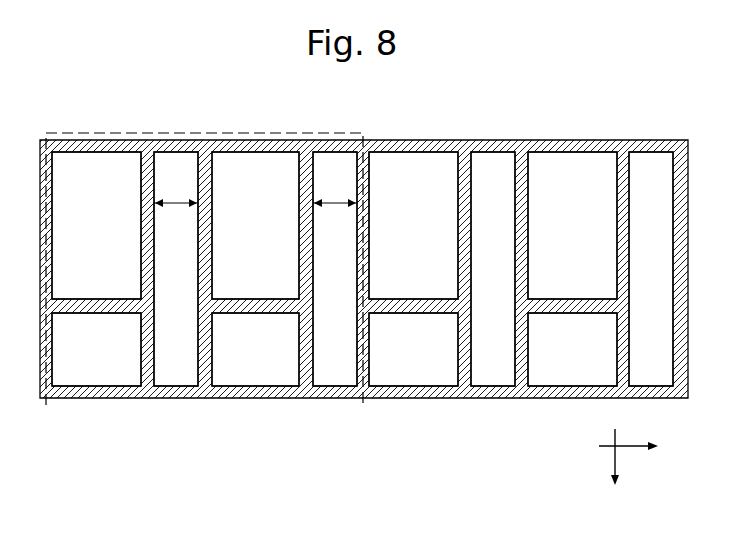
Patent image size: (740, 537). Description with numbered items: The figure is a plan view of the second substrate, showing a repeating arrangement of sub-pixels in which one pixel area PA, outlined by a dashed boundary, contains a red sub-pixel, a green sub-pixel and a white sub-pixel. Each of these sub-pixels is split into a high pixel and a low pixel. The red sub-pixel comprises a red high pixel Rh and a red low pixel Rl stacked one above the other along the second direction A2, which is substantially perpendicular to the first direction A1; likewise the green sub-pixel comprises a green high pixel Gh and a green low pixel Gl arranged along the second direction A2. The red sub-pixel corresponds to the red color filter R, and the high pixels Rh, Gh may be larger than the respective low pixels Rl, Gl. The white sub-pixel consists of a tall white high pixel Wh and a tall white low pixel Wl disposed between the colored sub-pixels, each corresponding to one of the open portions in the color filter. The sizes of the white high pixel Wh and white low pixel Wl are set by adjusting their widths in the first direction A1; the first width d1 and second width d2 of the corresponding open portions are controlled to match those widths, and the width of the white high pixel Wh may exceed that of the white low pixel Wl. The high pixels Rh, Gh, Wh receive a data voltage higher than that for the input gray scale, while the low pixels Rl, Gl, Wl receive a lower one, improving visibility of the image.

The red high pixel Rh is at (255, 225).
The red low pixel Rl is at (96, 349).
The green high pixel Gh is at (414, 225).
The green low pixel Gl is at (414, 349).
The red color filter R is at (413, 349).
The white high pixel Wh is at (334, 269).
The white low pixel Wl is at (493, 269).
The first width d1 is at (176, 214).
The second width d2 is at (335, 214).
The pixel area PA is at (262, 405).
The first direction A1 is at (643, 446).
The second direction A2 is at (614, 470).